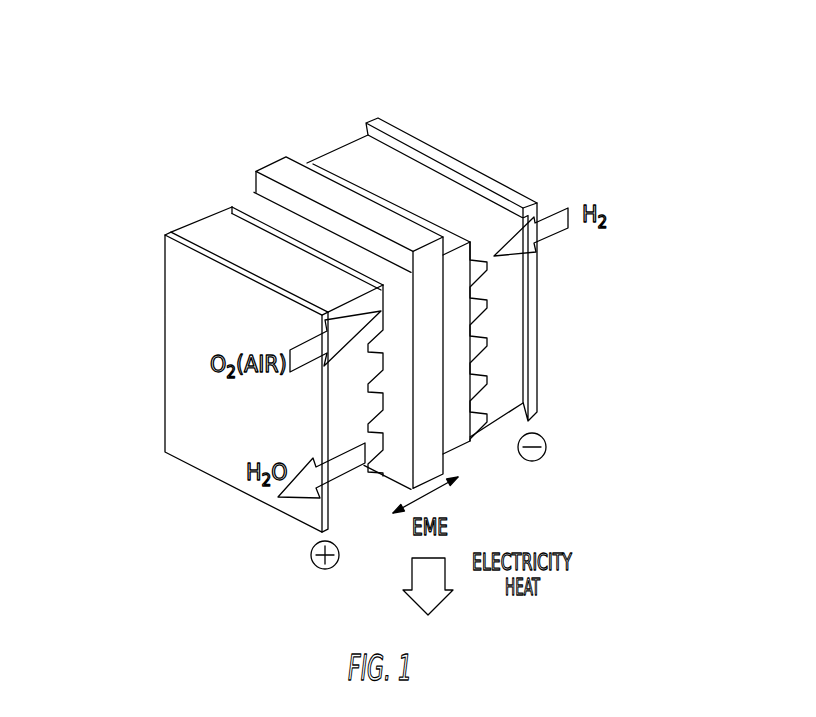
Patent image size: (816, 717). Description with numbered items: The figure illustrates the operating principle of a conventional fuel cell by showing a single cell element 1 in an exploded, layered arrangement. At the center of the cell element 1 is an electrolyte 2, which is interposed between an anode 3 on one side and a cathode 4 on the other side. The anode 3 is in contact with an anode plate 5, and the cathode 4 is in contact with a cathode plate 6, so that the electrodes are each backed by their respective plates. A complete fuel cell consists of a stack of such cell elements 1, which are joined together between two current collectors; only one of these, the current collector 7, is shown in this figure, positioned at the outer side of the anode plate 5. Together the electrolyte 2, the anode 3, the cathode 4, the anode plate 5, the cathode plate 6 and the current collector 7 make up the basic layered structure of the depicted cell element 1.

The cell element 1 is at (188, 294).
The electrolyte 2 is at (325, 193).
The anode 3 is at (419, 219).
The cathode 4 is at (266, 206).
The anode plate 5 is at (478, 210).
The cathode plate 6 is at (218, 235).
The current collector 7 is at (539, 411).